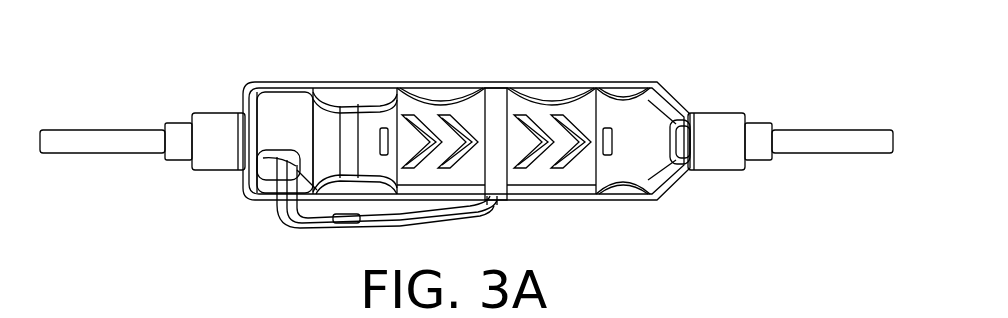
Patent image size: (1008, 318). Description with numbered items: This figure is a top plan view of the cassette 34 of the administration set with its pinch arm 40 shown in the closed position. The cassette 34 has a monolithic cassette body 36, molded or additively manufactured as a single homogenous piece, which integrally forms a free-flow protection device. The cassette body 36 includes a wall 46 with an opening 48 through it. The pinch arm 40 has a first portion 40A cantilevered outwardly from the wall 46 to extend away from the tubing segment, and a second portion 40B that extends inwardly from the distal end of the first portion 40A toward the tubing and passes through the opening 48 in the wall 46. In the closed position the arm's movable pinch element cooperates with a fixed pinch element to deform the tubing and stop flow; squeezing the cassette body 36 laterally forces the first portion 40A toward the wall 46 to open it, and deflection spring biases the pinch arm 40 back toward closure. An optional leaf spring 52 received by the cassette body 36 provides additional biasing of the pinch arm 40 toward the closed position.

The cassette 34 is at (568, 52).
The cassette body 36 is at (563, 193).
The pinch arm 40 is at (308, 228).
The first portion 40A is at (443, 223).
The second portion 40B is at (283, 176).
The wall 46 is at (267, 200).
The opening 48 is at (257, 183).
The spring 52 is at (404, 217).